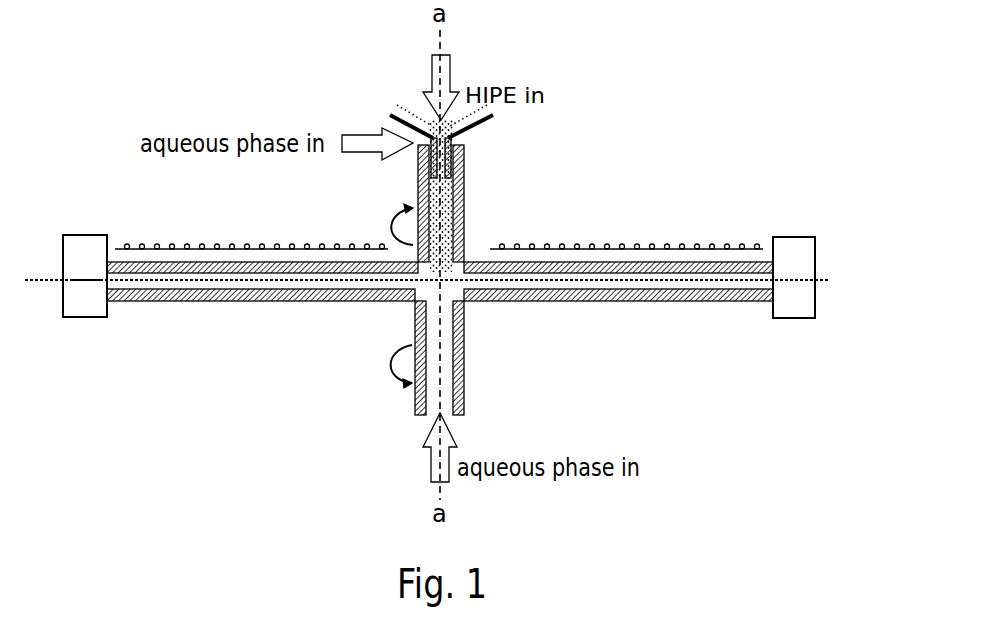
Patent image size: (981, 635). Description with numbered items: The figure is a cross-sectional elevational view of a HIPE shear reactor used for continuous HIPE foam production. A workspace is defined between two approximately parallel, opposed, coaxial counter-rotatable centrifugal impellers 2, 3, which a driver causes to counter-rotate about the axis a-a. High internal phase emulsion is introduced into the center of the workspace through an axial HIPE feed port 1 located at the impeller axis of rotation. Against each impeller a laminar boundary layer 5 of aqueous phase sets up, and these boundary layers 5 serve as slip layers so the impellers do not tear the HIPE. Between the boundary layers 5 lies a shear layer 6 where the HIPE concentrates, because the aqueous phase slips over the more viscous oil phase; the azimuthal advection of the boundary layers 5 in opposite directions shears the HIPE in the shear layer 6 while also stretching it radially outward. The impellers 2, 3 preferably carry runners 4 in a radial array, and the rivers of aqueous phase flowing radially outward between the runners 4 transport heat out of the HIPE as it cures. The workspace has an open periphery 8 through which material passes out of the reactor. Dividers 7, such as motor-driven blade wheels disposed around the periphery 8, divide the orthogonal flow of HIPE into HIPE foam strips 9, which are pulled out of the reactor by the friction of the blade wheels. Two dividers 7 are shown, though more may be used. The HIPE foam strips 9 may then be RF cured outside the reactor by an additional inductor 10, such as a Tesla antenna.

The axial HIPE feed port 1 is at (455, 130).
The centrifugal impeller 2 is at (268, 265).
The centrifugal impeller 3 is at (275, 300).
The runners 4 is at (337, 287).
The laminar boundary layers 5 is at (540, 270).
The shear layer 6 is at (645, 278).
The dividers 7 is at (95, 318).
The open periphery 8 is at (107, 282).
The HIPE foam strips 9 is at (92, 278).
The inductor 10 is at (357, 248).